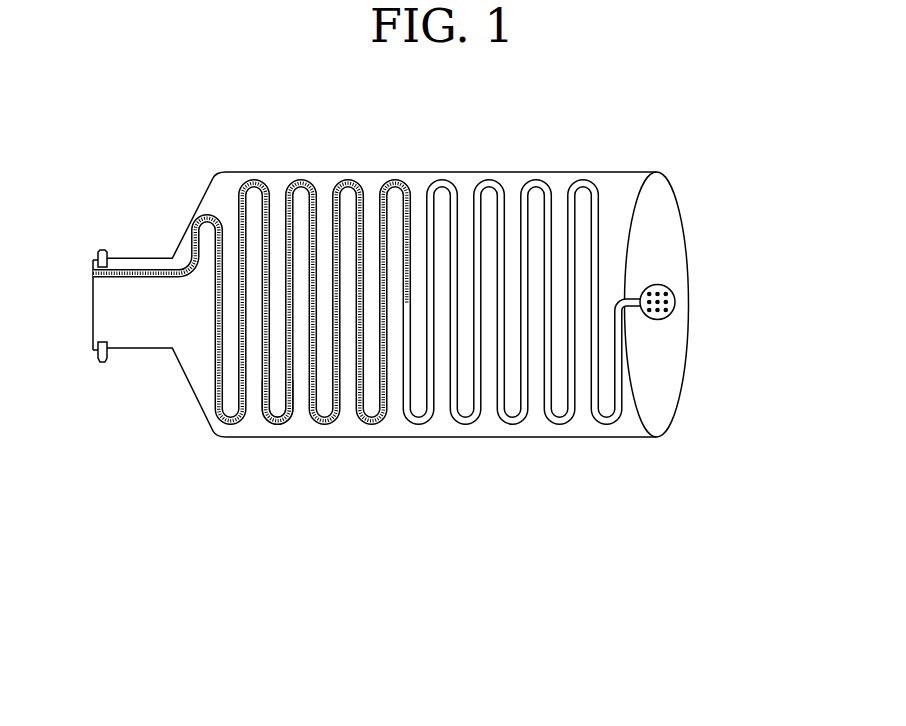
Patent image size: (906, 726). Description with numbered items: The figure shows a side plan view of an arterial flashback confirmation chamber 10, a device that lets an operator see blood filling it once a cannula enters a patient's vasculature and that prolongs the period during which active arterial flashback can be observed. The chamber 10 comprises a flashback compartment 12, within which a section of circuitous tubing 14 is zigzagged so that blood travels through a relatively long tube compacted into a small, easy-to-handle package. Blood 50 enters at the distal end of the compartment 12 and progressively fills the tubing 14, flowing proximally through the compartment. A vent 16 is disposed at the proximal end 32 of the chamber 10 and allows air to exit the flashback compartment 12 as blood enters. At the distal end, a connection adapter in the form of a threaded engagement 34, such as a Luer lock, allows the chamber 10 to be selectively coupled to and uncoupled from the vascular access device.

The arterial flashback confirmation chamber 10 is at (442, 280).
The flashback compartment 12 is at (417, 169).
The tubing 14 is at (548, 182).
The vent 16 is at (675, 302).
The proximal end 32 is at (696, 243).
The threaded engagement 34 is at (102, 250).
The blood 50 is at (278, 426).